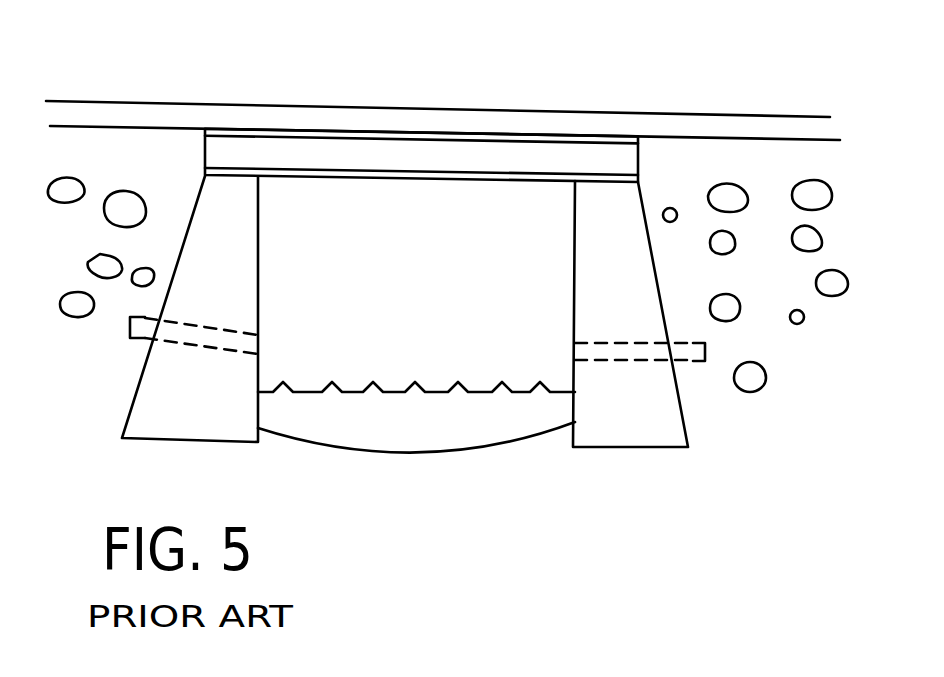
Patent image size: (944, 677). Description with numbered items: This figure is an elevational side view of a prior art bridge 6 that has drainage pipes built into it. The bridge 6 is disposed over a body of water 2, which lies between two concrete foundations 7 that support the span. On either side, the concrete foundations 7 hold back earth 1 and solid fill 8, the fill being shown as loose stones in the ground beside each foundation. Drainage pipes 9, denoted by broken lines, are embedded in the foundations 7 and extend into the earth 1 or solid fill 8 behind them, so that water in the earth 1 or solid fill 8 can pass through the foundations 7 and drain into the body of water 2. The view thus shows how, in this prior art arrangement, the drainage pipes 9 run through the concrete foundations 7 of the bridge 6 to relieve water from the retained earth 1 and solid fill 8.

The earth 1 is at (813, 397).
The body of water 2 is at (470, 425).
The bridge 6 is at (133, 72).
The concrete foundations 7 is at (605, 243).
The solid fill 8 is at (702, 263).
The drainage pipes 9 is at (141, 338).